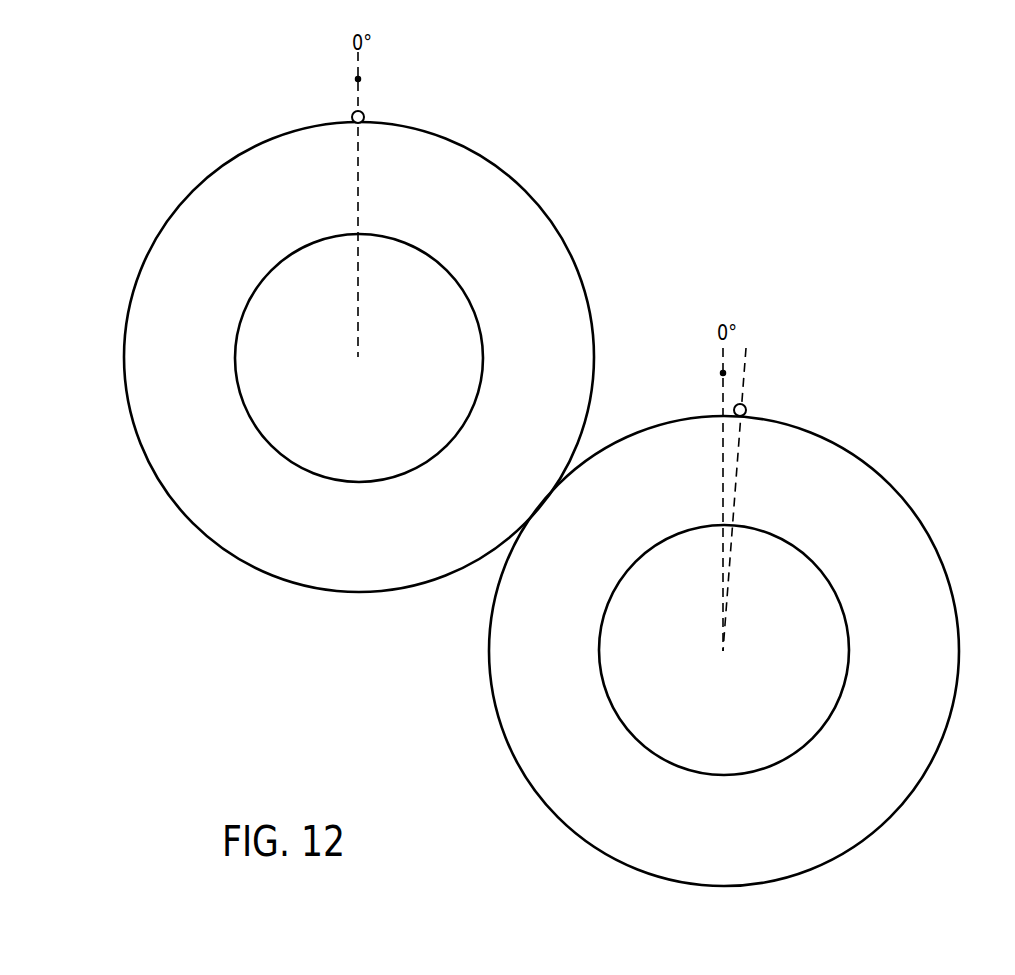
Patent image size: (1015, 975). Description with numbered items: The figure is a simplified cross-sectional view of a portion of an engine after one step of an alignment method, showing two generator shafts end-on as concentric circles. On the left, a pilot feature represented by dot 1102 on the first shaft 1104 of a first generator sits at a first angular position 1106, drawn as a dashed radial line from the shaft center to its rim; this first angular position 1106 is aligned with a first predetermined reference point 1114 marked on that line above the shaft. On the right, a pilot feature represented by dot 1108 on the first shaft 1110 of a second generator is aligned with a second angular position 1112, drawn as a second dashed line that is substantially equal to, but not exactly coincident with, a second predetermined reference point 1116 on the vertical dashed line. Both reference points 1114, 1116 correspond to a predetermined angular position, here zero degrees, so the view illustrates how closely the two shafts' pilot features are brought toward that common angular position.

The dot 1102 is at (364, 116).
The first shaft 1104 is at (522, 210).
The first angular position 1106 is at (360, 172).
The first predetermined reference point 1114 is at (360, 79).
The dot 1108 is at (746, 409).
The first shaft 1110 is at (885, 508).
The second angular position 1112 is at (738, 448).
The second predetermined reference point 1116 is at (720, 373).